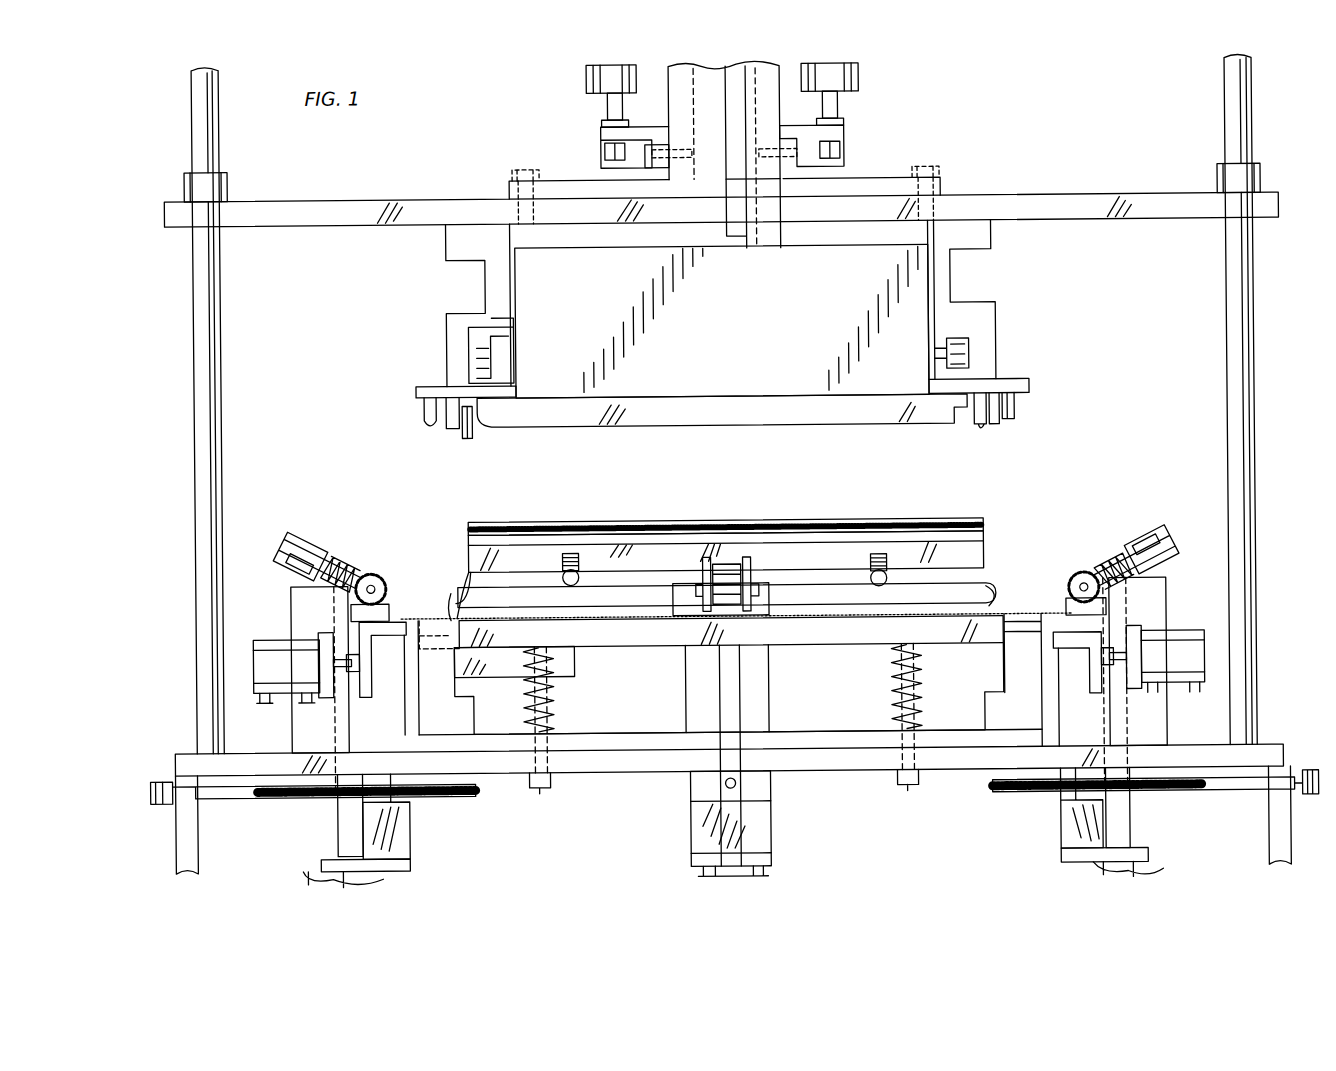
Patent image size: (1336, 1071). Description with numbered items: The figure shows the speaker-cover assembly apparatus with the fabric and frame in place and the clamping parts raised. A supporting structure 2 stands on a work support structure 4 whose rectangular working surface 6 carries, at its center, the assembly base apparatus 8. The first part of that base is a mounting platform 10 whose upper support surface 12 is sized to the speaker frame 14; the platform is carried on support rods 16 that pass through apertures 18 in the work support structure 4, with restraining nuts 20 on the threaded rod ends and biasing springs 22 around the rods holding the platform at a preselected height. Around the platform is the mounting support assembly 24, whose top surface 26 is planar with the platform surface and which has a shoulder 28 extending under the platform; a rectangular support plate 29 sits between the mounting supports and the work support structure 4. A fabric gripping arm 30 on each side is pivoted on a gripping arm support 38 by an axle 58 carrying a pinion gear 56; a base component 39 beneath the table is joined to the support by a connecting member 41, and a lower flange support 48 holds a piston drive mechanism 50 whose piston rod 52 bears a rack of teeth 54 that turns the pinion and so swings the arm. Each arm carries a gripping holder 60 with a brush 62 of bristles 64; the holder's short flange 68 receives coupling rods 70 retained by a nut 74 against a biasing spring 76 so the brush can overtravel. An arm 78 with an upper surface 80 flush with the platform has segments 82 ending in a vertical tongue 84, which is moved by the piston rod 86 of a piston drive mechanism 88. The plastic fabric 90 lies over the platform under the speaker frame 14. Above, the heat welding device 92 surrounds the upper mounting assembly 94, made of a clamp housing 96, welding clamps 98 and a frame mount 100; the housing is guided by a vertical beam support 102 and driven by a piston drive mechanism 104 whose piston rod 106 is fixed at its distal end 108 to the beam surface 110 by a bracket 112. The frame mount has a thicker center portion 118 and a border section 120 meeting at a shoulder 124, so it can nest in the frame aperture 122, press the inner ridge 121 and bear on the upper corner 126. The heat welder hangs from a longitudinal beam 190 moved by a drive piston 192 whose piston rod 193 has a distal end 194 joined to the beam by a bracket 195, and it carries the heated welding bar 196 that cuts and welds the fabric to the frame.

The supporting structure 2 is at (1257, 468).
The work support structure 4 is at (1283, 760).
The working surface 6 is at (1198, 753).
The assembly base apparatus 8 is at (1174, 578).
The mounting platform 10 is at (1000, 640).
The upper support surface 12 is at (1004, 620).
The speaker frame 14 is at (988, 588).
The support rods 16 is at (552, 698).
The apertures 18 is at (544, 790).
The restraining nuts 20 is at (525, 792).
The biasing springs 22 is at (552, 672).
The mounting support assembly 24 is at (456, 668).
The top surface 26 is at (452, 622).
The shoulder 28 is at (472, 698).
The rectangular support plate 29 is at (650, 736).
The fabric gripping arm 30 is at (700, 592).
The gripping arm support 38 is at (290, 596).
The base component 39 is at (1058, 826).
The connecting member 41 is at (1050, 796).
The lower flange support 48 is at (407, 862).
The piston drive mechanism 50 is at (768, 858).
The piston rod 52 is at (767, 677).
The rack of teeth 54 is at (384, 608).
The pinion gear 56 is at (745, 570).
The axle 58 is at (768, 598).
The gripping holder 60 is at (985, 545).
The brush 62 is at (985, 522).
The bristles 64 is at (318, 530).
The short flange 68 is at (345, 535).
The coupling rods 70 is at (355, 562).
The nut 74 is at (878, 592).
The biasing spring 76 is at (1105, 545).
The arm 78 is at (403, 648).
The upper surface 80 is at (455, 593).
The segments 82 is at (340, 625).
The vertical tongue 84 is at (392, 698).
The piston rod 86 is at (345, 672).
The piston drive mechanism 88 is at (250, 680).
The fabric 90 is at (462, 585).
The heat welding device 92 is at (1016, 412).
The upper mounting assembly 94 is at (817, 240).
The clamp housing 96 is at (512, 276).
The welding clamps 98 is at (462, 344).
The frame mount 100 is at (915, 410).
The vertical beam support 102 is at (800, 160).
The piston drive mechanism 104 is at (862, 76).
The piston rod 106 is at (841, 108).
The distal end 108 is at (847, 158).
The beam surface 110 is at (783, 104).
The bracket 112 is at (847, 135).
The center portion 118 is at (705, 427).
The border section 120 is at (490, 418).
The inner ridge 121 is at (490, 608).
The aperture 122 is at (980, 604).
The shoulder 124 is at (958, 428).
The upper corner 126 is at (470, 560).
The longitudinal beam 190 is at (672, 106).
The drive piston 192 is at (590, 86).
The piston rod 193 is at (611, 112).
The distal end 194 is at (604, 148).
The bracket 195 is at (648, 160).
The welding bar 196 is at (465, 440).